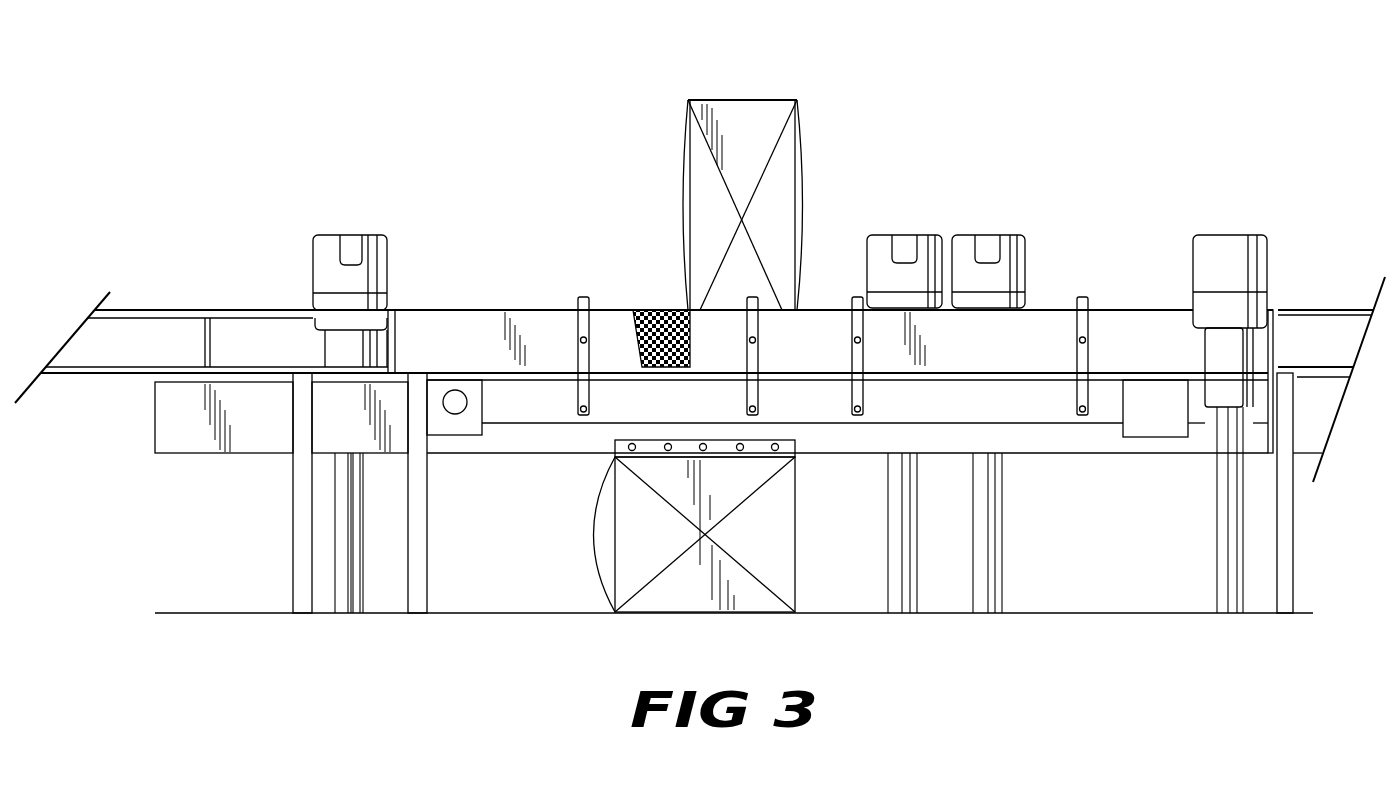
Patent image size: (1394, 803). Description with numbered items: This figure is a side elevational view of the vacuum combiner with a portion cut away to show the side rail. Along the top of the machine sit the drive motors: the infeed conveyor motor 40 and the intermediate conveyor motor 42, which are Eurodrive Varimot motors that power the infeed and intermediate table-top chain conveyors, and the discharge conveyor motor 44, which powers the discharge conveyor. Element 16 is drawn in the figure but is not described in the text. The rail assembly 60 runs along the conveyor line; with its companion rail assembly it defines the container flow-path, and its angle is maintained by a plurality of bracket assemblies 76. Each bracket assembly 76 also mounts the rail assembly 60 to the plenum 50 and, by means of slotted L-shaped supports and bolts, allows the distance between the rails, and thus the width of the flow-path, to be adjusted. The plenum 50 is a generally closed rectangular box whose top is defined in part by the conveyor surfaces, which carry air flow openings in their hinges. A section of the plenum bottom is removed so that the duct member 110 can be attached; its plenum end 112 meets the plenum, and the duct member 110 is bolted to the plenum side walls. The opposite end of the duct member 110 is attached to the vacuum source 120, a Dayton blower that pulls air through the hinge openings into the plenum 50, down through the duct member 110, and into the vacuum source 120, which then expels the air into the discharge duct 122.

The clamp 16 is at (350, 243).
The infeed conveyor motor 40 is at (905, 243).
The intermediate conveyor motor 42 is at (990, 243).
The discharge conveyor motor 44 is at (1225, 245).
The plenum 50 is at (258, 438).
The rail assembly 60 is at (670, 291).
The bracket assembly 76 is at (858, 297).
The duct member 110 is at (690, 593).
The plenum end 112 is at (795, 482).
The vacuum source 120 is at (600, 532).
The discharge duct 122 is at (775, 110).